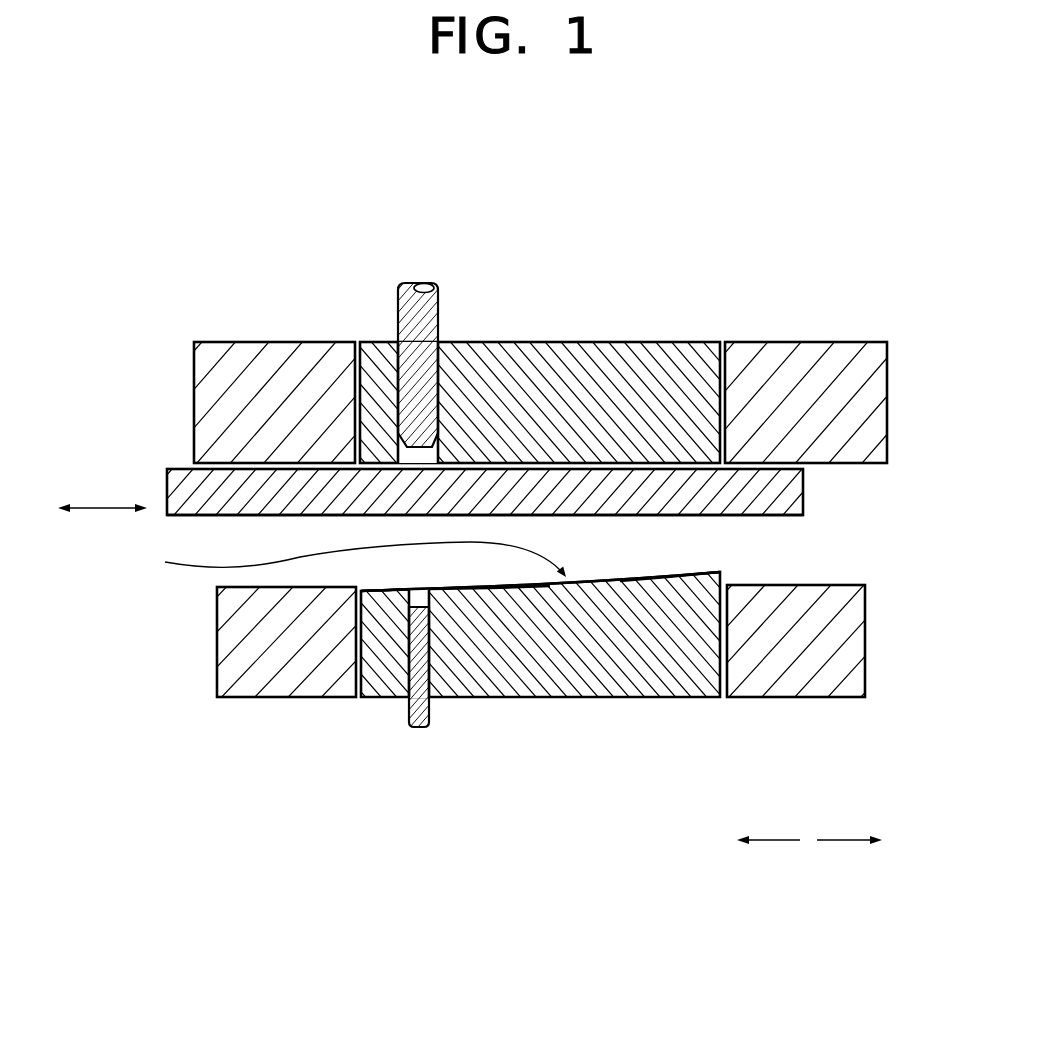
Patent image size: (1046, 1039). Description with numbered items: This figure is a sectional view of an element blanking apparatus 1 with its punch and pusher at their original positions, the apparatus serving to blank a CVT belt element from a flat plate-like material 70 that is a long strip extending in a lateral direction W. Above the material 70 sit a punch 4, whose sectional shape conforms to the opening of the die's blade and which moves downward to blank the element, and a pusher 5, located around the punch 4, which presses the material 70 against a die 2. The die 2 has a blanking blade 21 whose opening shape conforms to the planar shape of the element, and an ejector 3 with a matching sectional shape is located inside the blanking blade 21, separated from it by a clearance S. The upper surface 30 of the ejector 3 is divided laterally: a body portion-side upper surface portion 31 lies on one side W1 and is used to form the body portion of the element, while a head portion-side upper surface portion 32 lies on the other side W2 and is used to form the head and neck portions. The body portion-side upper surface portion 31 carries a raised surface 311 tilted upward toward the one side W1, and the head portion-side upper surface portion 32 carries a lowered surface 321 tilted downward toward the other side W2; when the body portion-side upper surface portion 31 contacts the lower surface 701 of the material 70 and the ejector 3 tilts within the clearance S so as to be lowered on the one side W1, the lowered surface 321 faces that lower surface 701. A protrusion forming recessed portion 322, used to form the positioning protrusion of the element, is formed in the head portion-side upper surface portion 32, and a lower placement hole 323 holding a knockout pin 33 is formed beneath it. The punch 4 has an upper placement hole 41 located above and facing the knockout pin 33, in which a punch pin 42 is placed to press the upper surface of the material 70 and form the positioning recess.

The element blanking apparatus 1 is at (806, 289).
The die 2 is at (278, 680).
The blanking blade 21 is at (712, 582).
The ejector 3 is at (593, 667).
The upper surface 30 is at (346, 560).
The body portion-side upper surface portion 31 is at (648, 573).
The raised surface 311 is at (690, 572).
The head portion-side upper surface portion 32 is at (493, 583).
The lowered surface 321 is at (382, 592).
The protrusion forming recessed portion 322 is at (428, 605).
The lower placement hole 323 is at (410, 604).
The knockout pin 33 is at (418, 656).
The punch 4 is at (620, 380).
The upper placement hole 41 is at (432, 397).
The punch pin 42 is at (417, 328).
The pusher 5 is at (271, 378).
The flat plate-like material 70 is at (775, 487).
The lower surface 701 is at (680, 515).
The clearance S is at (726, 647).
The lateral direction W is at (102, 495).
The one side in the lateral direction W1 is at (849, 827).
The other side in the lateral direction W2 is at (768, 827).